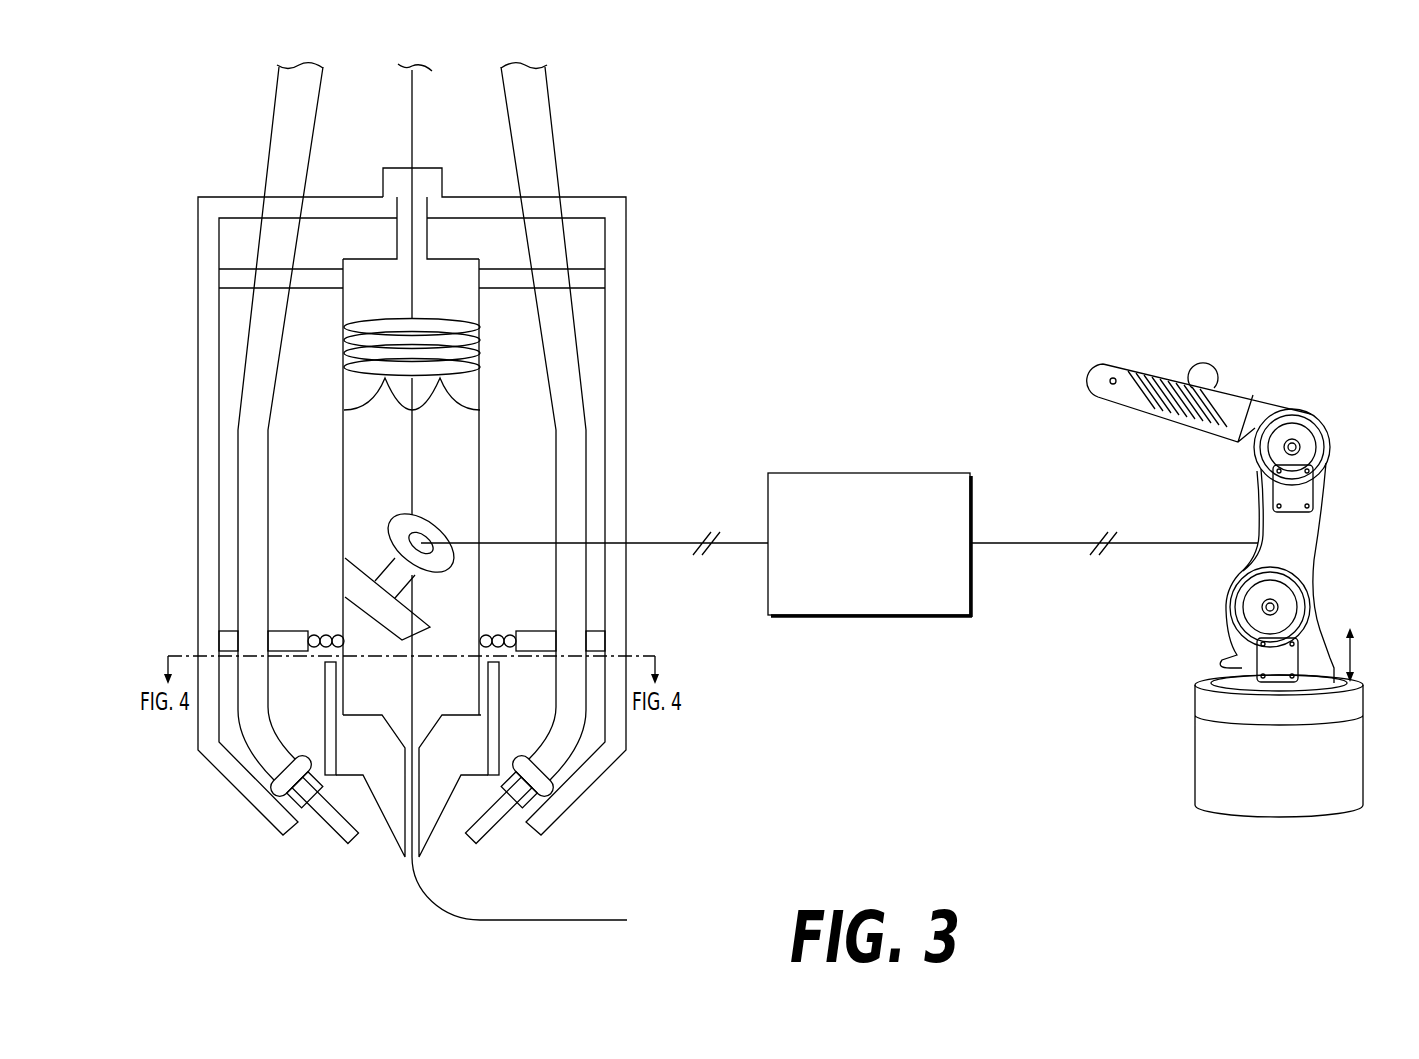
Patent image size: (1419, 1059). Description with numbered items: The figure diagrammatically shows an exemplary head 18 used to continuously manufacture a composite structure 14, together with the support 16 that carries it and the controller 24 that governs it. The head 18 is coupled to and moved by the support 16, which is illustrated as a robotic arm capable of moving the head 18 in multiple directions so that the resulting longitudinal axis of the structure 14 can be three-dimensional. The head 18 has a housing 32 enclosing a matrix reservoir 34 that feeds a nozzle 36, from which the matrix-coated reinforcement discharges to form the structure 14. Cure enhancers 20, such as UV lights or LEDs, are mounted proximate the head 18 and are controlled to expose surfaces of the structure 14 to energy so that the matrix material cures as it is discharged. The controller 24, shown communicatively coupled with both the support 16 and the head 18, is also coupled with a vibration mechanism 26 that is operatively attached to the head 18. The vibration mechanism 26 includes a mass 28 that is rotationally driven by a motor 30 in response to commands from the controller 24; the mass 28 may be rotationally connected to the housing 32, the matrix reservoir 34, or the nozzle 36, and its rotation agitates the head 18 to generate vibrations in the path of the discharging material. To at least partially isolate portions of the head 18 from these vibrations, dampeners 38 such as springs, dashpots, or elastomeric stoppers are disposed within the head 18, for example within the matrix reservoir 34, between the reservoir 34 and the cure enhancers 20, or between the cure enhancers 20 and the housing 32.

The composite structure 14 is at (575, 920).
The support 16 is at (1305, 551).
The head 18 is at (640, 172).
The cure enhancer 20 is at (328, 812).
The controller 24 is at (857, 568).
The vibration mechanism 26 is at (527, 461).
The mass 28 is at (400, 624).
The motor 30 is at (432, 539).
The housing 32 is at (615, 332).
The matrix reservoir 34 is at (480, 451).
The nozzle 36 is at (466, 761).
The dampener 38 is at (460, 352).